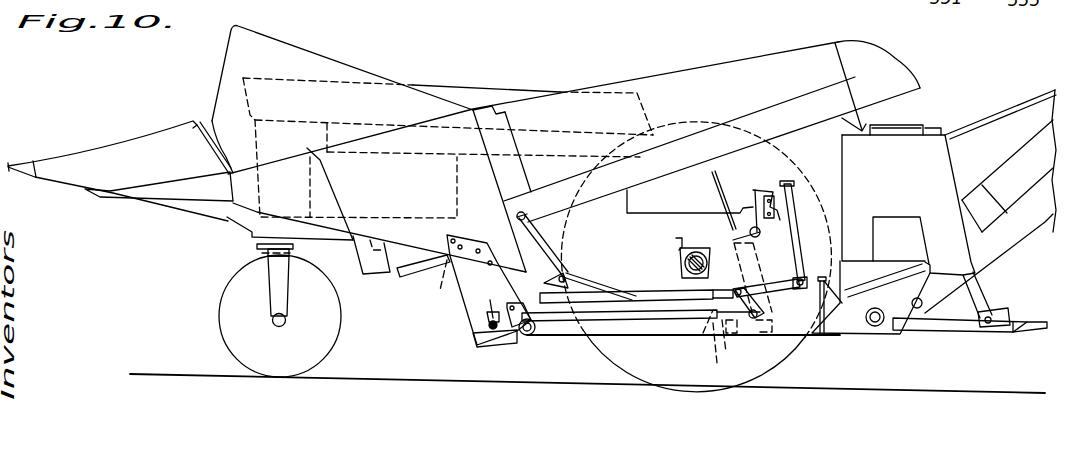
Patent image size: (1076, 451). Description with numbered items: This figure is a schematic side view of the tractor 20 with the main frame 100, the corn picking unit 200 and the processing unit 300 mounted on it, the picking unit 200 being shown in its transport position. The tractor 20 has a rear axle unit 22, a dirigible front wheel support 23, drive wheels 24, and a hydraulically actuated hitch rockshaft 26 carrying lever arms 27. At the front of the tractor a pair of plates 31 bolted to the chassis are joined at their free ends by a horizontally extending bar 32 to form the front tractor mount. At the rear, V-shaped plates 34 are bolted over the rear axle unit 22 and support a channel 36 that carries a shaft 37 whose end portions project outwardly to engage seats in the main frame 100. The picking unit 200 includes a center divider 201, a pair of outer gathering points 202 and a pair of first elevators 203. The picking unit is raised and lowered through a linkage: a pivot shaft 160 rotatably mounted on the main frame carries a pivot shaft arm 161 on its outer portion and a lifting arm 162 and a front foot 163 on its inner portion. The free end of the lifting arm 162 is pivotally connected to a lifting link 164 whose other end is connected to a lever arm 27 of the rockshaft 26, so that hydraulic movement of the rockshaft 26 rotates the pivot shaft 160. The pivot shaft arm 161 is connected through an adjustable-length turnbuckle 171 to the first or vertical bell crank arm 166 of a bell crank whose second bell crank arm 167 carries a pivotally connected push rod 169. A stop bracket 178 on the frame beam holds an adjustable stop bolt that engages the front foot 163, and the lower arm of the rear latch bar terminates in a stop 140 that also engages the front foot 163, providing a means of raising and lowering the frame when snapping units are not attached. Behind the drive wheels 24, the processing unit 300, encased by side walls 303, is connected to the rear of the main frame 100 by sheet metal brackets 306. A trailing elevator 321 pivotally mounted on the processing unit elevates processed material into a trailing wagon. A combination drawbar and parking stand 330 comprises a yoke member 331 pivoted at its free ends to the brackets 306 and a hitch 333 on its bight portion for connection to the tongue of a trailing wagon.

The tractor 20 is at (475, 80).
The corn picking unit 200 is at (292, 40).
The center divider 201 is at (150, 166).
The outer gathering points 202 is at (212, 199).
The first elevators 203 is at (750, 97).
The dirigible front wheel support 23 is at (256, 252).
The drive wheels 24 is at (778, 150).
The plates 31 is at (456, 286).
The horizontally extending bar 32 is at (490, 310).
The push rod 169 is at (548, 246).
The second bell crank arm 167 is at (572, 282).
The turnbuckle 171 is at (640, 293).
The first or vertical bell crank arm 166 is at (536, 327).
The main frame 100 is at (565, 335).
The pivot shaft arm 161 is at (710, 313).
The rear axle unit 22 is at (682, 256).
The V-shaped plates 34 is at (677, 238).
The channel 36 is at (707, 226).
The hydraulically actuated hitch rockshaft 26 is at (722, 206).
The lever arms 27 is at (768, 187).
The shaft 37 is at (748, 239).
The lifting link 164 is at (796, 207).
The lifting arm 162 is at (788, 295).
The pivot shaft 160 is at (747, 327).
The front foot 163 is at (707, 337).
The stop bracket 178 is at (716, 345).
The stop 140 is at (772, 322).
The side walls 303 is at (918, 189).
The sheet metal bracket 306 is at (905, 308).
The processing unit 300 is at (963, 154).
The trailing elevator 321 is at (1055, 265).
The combination drawbar and parking stand 330 is at (1021, 302).
The yoke member 331 is at (963, 331).
The hitch 333 is at (1027, 330).